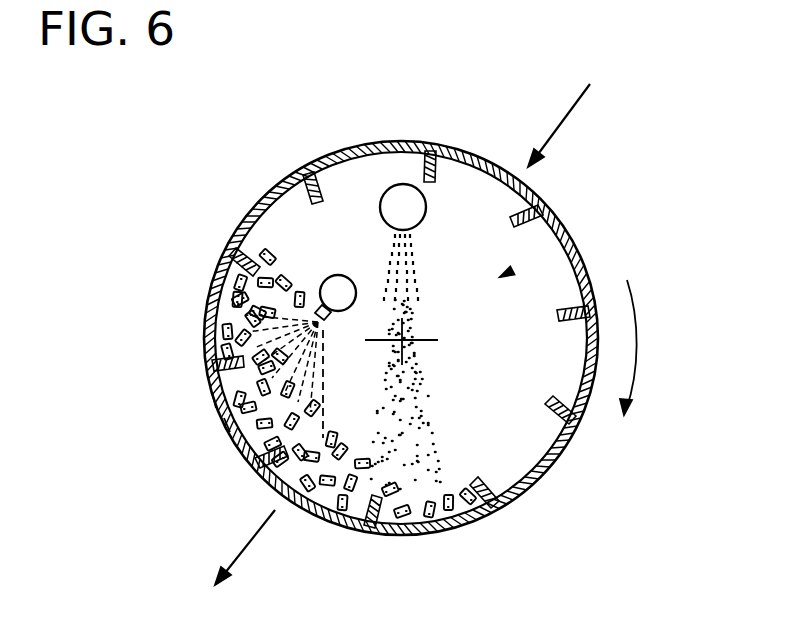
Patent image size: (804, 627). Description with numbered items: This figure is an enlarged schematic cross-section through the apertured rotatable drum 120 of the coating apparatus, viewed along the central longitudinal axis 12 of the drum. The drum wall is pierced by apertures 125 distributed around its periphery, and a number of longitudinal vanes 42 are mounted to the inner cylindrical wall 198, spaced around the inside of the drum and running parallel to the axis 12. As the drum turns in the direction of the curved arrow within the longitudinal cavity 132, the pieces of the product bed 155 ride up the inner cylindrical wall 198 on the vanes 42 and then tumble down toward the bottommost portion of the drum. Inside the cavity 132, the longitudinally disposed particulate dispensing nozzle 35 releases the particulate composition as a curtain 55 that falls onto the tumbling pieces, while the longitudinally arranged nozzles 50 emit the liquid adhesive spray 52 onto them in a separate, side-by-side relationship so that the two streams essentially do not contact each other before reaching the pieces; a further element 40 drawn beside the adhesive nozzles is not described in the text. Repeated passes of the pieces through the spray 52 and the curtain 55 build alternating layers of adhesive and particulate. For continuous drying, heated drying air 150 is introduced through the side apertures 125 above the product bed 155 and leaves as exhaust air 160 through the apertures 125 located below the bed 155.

The central longitudinal axis 12 is at (438, 332).
The particulate dispensing nozzle 35 is at (383, 196).
The second spray nozzle 40 is at (342, 277).
The longitudinal vanes 42 is at (312, 172).
The longitudinally arranged nozzles 50 is at (324, 322).
The liquid adhesive spray 52 is at (328, 383).
The particulate composition curtain 55 is at (410, 263).
The apertured rotatable drum 120 is at (301, 160).
The apertures 125 is at (433, 178).
The longitudinal cavity 132 is at (500, 277).
The drying air 150 is at (590, 84).
The product bed 155 is at (217, 400).
The exhaust air 160 is at (275, 510).
The inner cylindrical wall 198 is at (230, 425).